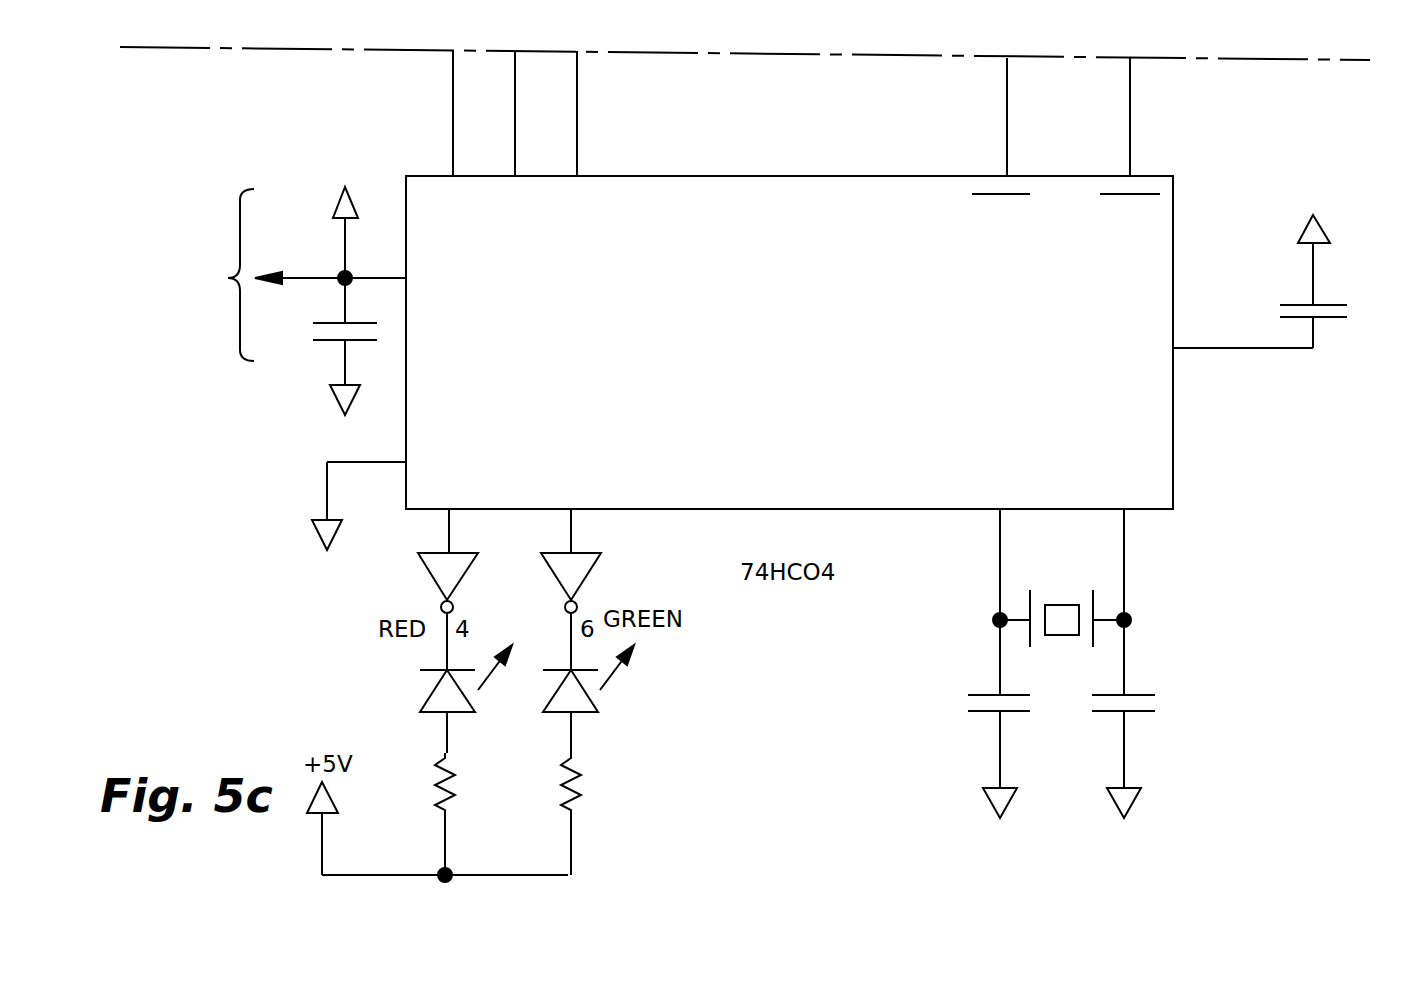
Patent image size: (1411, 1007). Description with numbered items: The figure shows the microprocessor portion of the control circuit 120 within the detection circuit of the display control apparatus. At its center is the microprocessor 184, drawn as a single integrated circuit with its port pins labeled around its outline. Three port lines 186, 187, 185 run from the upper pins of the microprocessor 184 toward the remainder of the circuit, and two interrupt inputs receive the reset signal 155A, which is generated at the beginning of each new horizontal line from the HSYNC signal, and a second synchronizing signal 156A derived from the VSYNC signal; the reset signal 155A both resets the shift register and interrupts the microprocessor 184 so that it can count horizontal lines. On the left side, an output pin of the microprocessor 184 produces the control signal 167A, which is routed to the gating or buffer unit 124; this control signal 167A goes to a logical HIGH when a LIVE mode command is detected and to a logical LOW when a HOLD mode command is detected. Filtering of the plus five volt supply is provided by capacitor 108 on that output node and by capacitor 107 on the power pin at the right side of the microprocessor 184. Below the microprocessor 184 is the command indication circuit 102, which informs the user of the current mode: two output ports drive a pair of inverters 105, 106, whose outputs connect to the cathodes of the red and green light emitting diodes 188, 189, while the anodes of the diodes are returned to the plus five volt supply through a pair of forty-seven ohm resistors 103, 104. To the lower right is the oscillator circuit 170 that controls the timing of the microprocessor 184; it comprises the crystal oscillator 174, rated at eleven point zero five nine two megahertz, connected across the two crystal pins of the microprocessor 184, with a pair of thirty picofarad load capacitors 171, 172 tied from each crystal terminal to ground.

The microprocessor 184 is at (799, 176).
The P1.1 port line 186 is at (453, 107).
The P1.0 port line 187 is at (515, 105).
The P1.2 port line 185 is at (577, 126).
The reset signal 155A is at (1007, 124).
The INT1 interrupt line 156A is at (1130, 131).
The control signal 167A is at (305, 278).
The gating or buffer unit 124 is at (166, 275).
The capacitor 108 is at (323, 341).
The capacitor 107 is at (1332, 320).
The inverter 105 is at (430, 578).
The inverter 106 is at (597, 576).
The light emitting diode 188 is at (425, 690).
The light emitting diode 189 is at (598, 703).
The 47 ohm resistor 103 is at (445, 760).
The 47 ohm resistor 104 is at (575, 773).
The control circuit 120 is at (272, 650).
The command indication circuit 102 is at (266, 745).
The oscillator circuit 170 is at (898, 655).
The crystal oscillator 174 is at (1094, 647).
The load capacitor 171 is at (983, 710).
The load capacitor 172 is at (1141, 695).